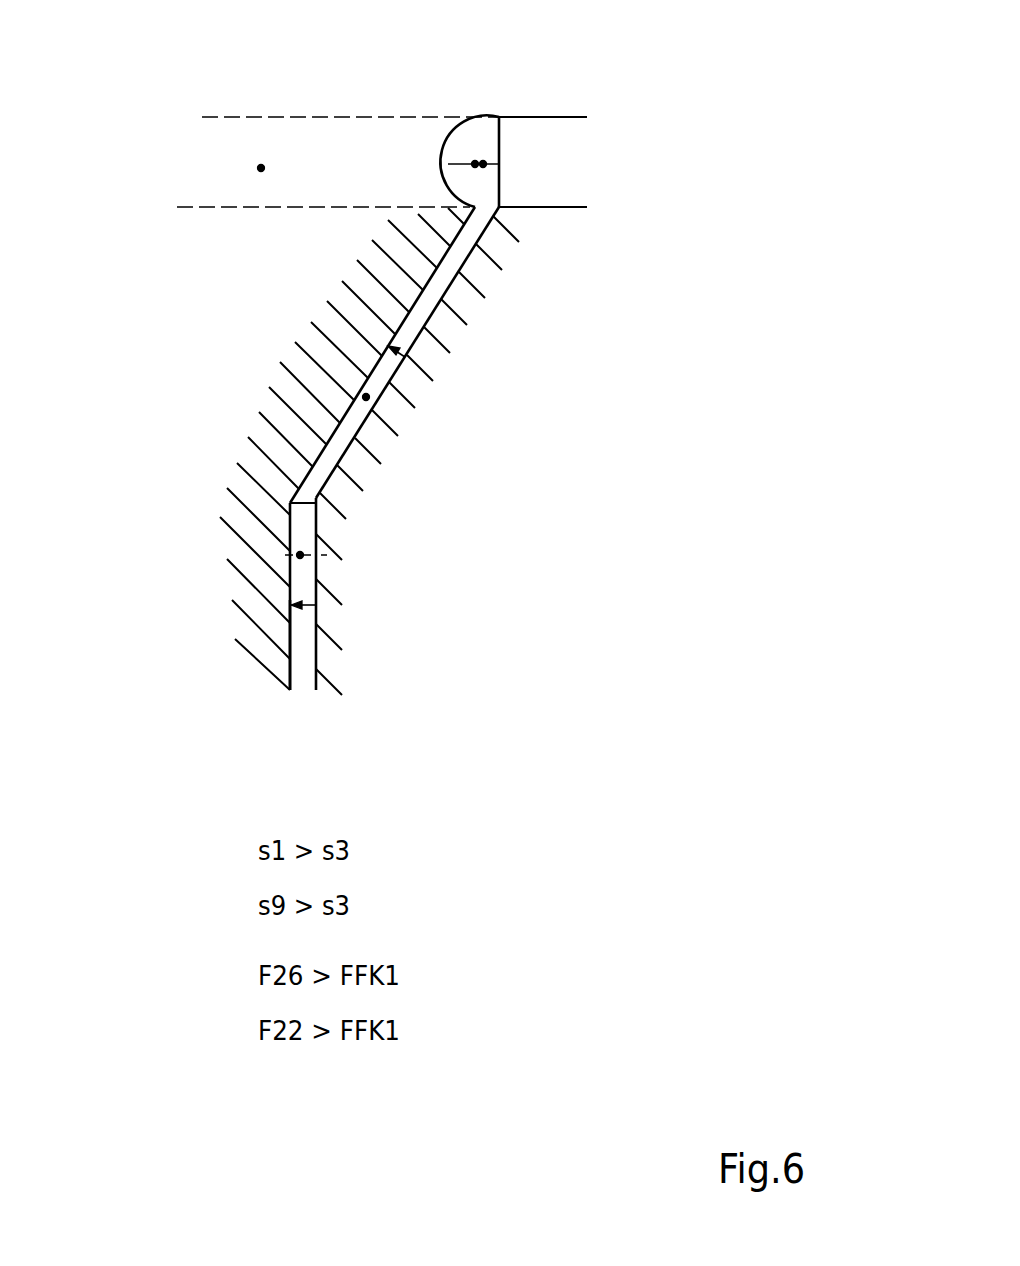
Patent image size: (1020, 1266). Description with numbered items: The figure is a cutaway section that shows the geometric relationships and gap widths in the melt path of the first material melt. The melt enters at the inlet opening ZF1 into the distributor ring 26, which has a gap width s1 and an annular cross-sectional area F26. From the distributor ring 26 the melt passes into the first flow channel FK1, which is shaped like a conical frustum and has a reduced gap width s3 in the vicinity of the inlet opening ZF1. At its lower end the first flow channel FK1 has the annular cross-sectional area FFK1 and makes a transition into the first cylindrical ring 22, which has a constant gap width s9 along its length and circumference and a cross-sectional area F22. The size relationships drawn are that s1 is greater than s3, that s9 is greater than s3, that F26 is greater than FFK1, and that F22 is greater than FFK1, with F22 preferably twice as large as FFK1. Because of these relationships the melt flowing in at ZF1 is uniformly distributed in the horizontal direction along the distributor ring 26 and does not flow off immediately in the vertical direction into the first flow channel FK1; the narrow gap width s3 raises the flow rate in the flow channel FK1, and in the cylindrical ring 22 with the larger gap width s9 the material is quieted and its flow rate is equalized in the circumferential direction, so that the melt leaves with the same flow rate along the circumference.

The distributor ring 26 is at (310, 109).
The annular cross-sectional area of the distributor ring F26 is at (468, 107).
The gap width of the distributor ring s1 is at (538, 102).
The inlet opening ZF1 is at (643, 161).
The first flow channel FK1 is at (330, 355).
The cross-sectional area at the end of the first flow channel FFK1 is at (465, 355).
The gap width of the first flow channel s3 is at (484, 394).
The first cylindrical ring 22 is at (207, 582).
The gap width of the cylindrical ring s9 is at (402, 558).
The cross-sectional area of the cylindrical ring F22 is at (397, 649).